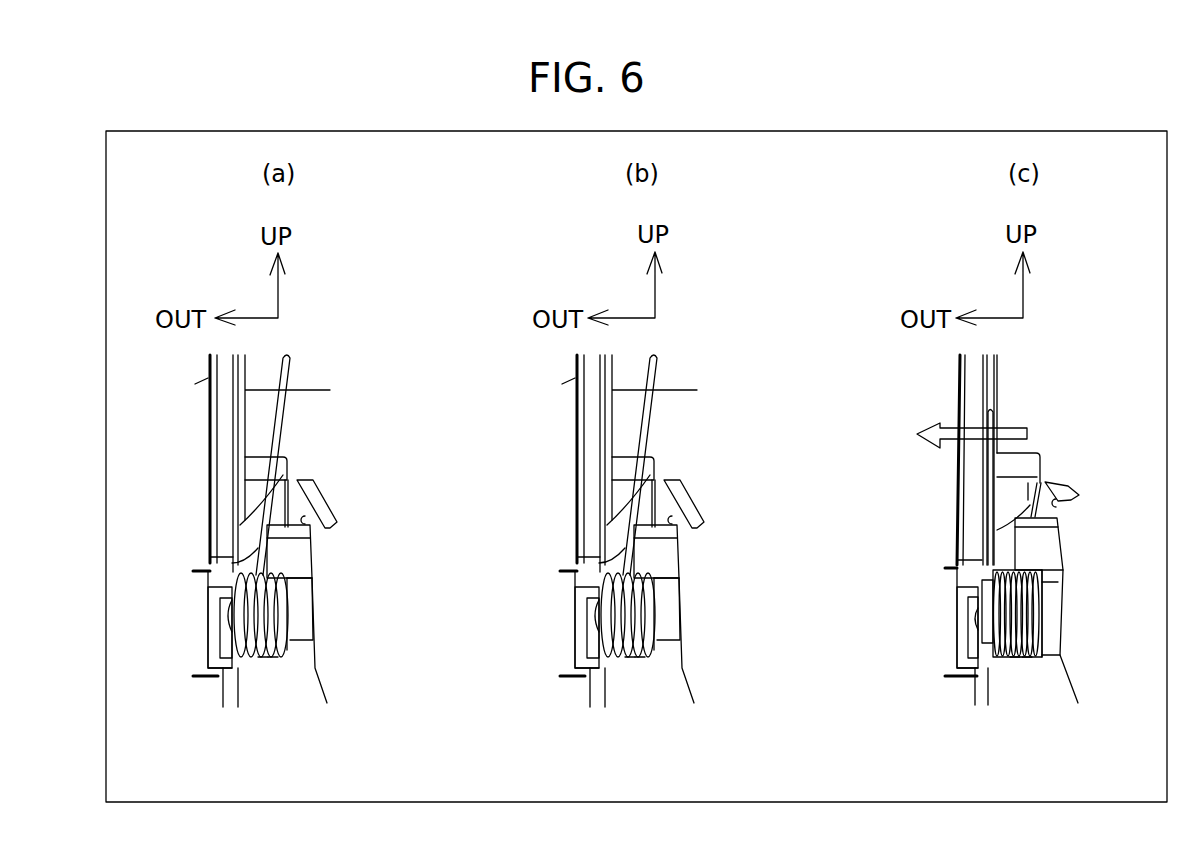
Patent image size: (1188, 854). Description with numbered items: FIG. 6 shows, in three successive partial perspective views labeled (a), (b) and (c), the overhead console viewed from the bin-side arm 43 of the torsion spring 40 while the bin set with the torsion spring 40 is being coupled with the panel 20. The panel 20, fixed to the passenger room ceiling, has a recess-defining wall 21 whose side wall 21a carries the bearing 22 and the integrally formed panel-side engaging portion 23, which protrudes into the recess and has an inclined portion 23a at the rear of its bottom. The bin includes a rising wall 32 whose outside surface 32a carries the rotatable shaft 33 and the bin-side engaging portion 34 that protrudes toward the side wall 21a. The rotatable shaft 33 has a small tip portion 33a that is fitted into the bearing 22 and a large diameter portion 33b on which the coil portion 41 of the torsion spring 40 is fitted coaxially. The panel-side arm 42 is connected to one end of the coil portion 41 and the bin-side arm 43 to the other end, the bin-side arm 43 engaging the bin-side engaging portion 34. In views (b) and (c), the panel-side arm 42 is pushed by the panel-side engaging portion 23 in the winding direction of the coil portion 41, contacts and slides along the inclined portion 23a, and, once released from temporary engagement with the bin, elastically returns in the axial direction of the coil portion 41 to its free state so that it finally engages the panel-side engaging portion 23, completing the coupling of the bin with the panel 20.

The panel 20 is at (217, 447).
The recess-defining wall 21 is at (220, 540).
The side wall 21a is at (220, 425).
The bearing 22 is at (227, 617).
The panel-side engaging portion 23 is at (283, 475).
The inclined portion 23a is at (253, 518).
The rising wall 32 is at (323, 512).
The outside surface of the rising wall 32a is at (310, 537).
The rotatable shaft 33 is at (298, 618).
The tip portion 33a is at (230, 630).
The large diameter portion 33b is at (298, 630).
The bin-side engaging portion 34 is at (297, 558).
The torsion spring 40 is at (263, 657).
The coil portion 41 is at (273, 657).
The panel-side arm 42 is at (289, 374).
The bin-side arm 43 is at (280, 598).